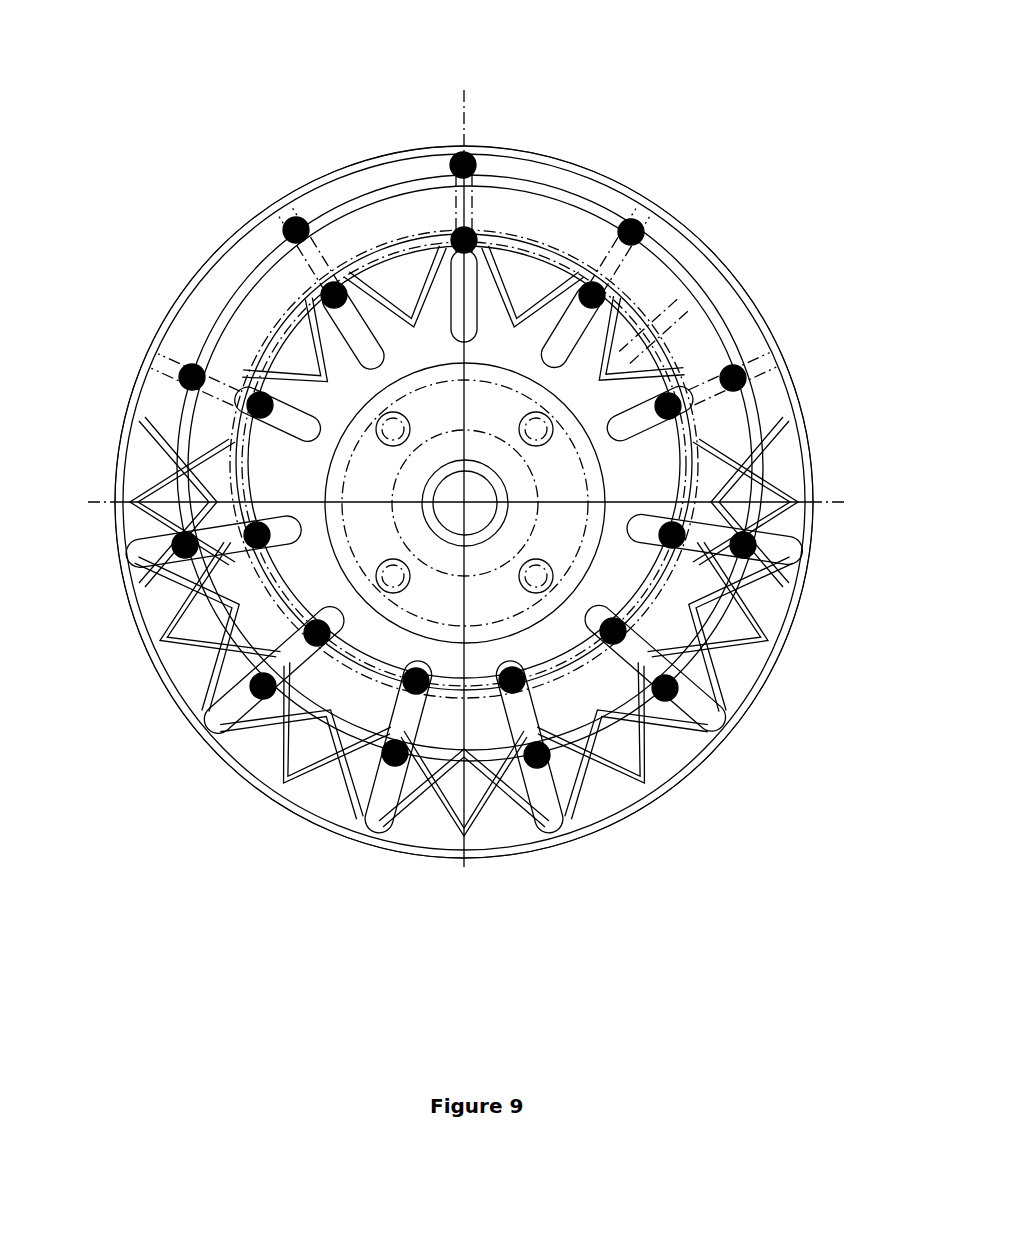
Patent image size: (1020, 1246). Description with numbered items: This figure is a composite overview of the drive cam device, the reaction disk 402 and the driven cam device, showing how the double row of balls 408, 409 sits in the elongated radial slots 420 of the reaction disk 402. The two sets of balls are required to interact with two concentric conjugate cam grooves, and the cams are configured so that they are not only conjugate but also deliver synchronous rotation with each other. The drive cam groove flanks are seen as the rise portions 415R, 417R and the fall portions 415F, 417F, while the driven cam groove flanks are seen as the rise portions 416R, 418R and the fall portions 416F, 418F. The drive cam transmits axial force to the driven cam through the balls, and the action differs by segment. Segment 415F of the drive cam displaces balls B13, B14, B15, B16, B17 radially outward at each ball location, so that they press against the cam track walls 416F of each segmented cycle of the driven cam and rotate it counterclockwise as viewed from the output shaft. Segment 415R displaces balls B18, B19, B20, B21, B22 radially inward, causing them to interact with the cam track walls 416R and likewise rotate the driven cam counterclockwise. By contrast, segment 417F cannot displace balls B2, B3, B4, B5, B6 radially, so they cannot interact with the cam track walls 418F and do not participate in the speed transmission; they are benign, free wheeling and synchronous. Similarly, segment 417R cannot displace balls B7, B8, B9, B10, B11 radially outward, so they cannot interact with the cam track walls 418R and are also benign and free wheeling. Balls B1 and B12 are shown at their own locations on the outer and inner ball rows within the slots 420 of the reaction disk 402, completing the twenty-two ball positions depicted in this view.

The reaction disk 402 is at (320, 838).
The balls 408 is at (462, 148).
The balls 409 is at (428, 173).
The fall portion of drive groove flank 415F is at (560, 270).
The rise portion of drive groove flank 415R is at (350, 193).
The fall portion of driven groove flank 416F is at (605, 342).
The rise portion of driven groove flank 416R is at (335, 330).
The fall portion of drive groove flank 417F is at (768, 438).
The rise portion of drive groove flank 417R is at (363, 253).
The fall portion of driven groove flank 418F is at (722, 411).
The rise portion of driven groove flank 418R is at (282, 282).
The slots 420 is at (574, 826).
The ball B1 is at (470, 158).
The ball B2 is at (634, 222).
The ball B3 is at (740, 372).
The ball B4 is at (752, 540).
The ball B5 is at (673, 687).
The ball B6 is at (545, 765).
The ball B7 is at (398, 768).
The ball B8 is at (262, 700).
The ball B9 is at (178, 553).
The ball B10 is at (180, 377).
The ball B11 is at (286, 224).
The ball B12 is at (470, 230).
The ball B13 is at (594, 284).
The ball B14 is at (676, 398).
The ball B15 is at (683, 531).
The ball B16 is at (625, 634).
The ball B17 is at (522, 690).
The ball B18 is at (419, 694).
The ball B19 is at (313, 646).
The ball B20 is at (250, 545).
The ball B21 is at (247, 405).
The ball B22 is at (325, 288).